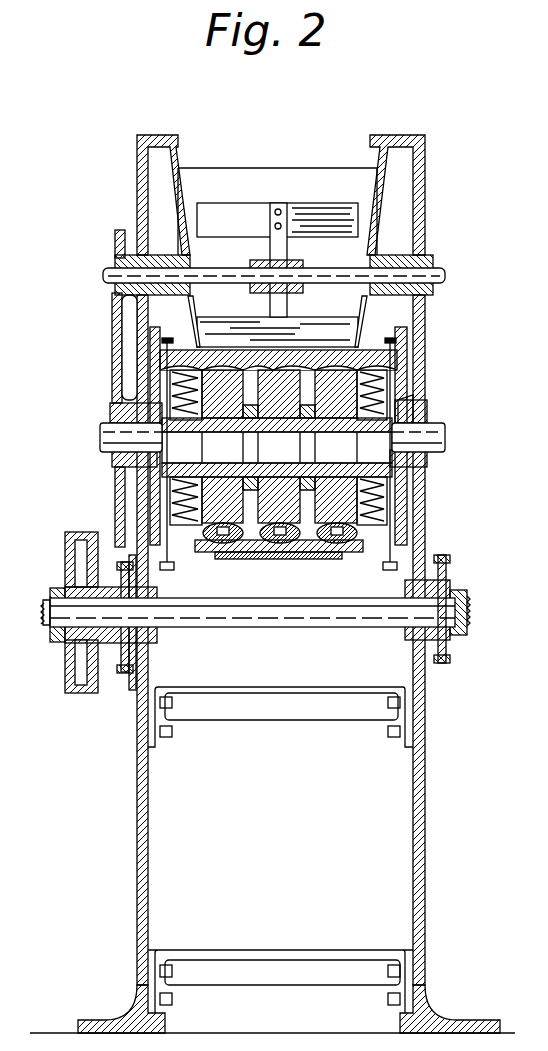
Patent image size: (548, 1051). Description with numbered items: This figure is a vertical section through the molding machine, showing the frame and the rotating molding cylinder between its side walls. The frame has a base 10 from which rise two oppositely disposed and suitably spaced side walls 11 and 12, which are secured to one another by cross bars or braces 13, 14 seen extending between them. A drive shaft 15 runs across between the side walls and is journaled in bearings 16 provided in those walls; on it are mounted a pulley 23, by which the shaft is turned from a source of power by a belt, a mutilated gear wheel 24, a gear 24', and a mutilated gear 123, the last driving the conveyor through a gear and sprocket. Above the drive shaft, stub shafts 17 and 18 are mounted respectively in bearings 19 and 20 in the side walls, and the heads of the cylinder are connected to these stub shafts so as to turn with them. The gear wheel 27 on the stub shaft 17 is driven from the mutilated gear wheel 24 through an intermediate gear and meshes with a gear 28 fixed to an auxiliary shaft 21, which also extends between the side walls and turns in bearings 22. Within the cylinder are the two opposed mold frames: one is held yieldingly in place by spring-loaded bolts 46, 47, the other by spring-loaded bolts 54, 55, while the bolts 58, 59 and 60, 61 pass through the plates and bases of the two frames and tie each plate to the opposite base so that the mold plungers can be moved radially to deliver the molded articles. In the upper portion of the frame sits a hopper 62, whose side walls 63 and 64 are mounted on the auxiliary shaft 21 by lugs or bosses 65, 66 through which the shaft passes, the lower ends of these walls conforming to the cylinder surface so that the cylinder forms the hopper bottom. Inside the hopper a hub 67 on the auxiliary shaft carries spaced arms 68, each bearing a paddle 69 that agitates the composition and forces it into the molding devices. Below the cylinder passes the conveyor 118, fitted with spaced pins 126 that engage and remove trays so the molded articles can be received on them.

The base 10 is at (85, 1022).
The side wall 11 is at (137, 838).
The side wall 12 is at (425, 835).
The cross bar 13 is at (290, 712).
The cross bar 14 is at (276, 966).
The drive shaft 15 is at (300, 612).
The bearing 16 is at (447, 570).
The stub shaft 17 is at (102, 438).
The stub shaft 18 is at (440, 430).
The bearing 19 is at (130, 412).
The bearing 20 is at (423, 405).
The auxiliary shaft 21 is at (103, 276).
The bearing 22 is at (127, 250).
The pulley 23 is at (75, 640).
The mutilated gear wheel 24 is at (114, 643).
The gear 24' is at (160, 622).
The gear wheel 27 is at (115, 498).
The gear 28 is at (112, 310).
The bolt 46 is at (192, 330).
The bolt 47 is at (362, 325).
The bolt 54 is at (205, 545).
The bolt 55 is at (340, 545).
The bolt 58 is at (168, 568).
The bolt 59 is at (394, 566).
The bolt 60 is at (167, 338).
The bolt 61 is at (391, 338).
The hopper 62 is at (284, 161).
The hopper side wall 63 is at (173, 162).
The hopper side wall 64 is at (380, 152).
The lug 65 is at (160, 257).
The lug 66 is at (386, 257).
The hub 67 is at (303, 266).
The arm 68 is at (270, 252).
The paddle 69 is at (312, 212).
The conveyor 118 is at (255, 553).
The mutilated gear 123 is at (448, 658).
The pin 126 is at (305, 560).